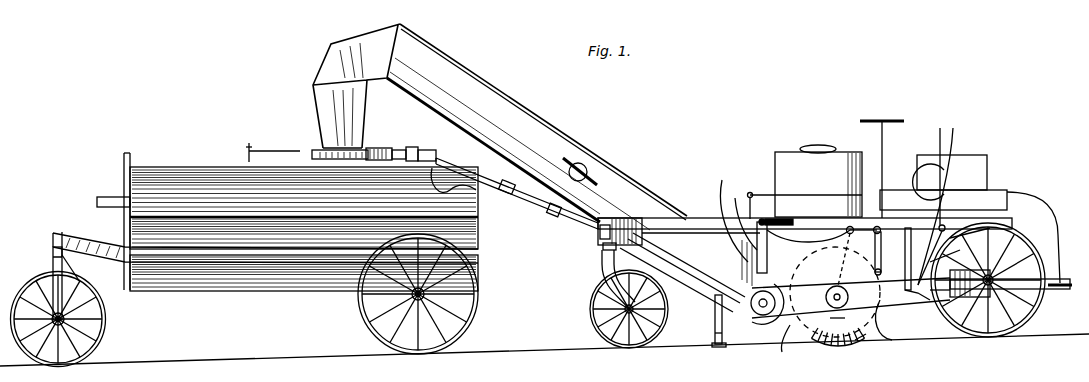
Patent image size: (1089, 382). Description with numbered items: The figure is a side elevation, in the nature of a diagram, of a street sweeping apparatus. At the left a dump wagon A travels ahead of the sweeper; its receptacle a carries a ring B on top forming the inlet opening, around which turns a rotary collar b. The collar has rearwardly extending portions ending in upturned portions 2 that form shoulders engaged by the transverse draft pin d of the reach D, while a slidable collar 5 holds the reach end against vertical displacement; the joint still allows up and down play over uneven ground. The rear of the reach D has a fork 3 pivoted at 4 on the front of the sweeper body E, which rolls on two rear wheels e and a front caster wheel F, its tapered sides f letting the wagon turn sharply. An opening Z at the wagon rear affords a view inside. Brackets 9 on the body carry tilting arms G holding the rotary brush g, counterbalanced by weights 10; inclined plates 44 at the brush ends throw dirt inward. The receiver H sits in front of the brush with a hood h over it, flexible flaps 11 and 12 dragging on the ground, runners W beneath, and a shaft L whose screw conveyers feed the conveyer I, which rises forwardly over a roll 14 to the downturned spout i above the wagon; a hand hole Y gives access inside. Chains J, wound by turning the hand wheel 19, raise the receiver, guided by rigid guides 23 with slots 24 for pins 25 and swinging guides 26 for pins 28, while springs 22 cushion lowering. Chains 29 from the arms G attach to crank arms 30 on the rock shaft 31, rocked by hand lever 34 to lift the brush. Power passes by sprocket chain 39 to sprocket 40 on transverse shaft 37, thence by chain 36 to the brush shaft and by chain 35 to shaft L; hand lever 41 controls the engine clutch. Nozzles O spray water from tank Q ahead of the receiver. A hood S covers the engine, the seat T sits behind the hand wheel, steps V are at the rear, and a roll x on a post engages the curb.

The receptacle a is at (190, 178).
The dump wagon A is at (290, 290).
The upturned portions 2 is at (426, 150).
The rotary collar b is at (318, 153).
The downturned spout i is at (330, 100).
The conveyer I is at (633, 184).
The hand hole Y is at (583, 164).
The ring B is at (371, 148).
The collar 5 is at (392, 150).
The transverse draft pin d is at (412, 149).
The fork 3 is at (434, 152).
The reach D is at (531, 197).
The opening Z is at (458, 185).
The pivot 4 is at (600, 233).
The roll 14 is at (620, 246).
The front caster wheel F is at (661, 340).
The body E is at (690, 217).
The tapered sides f is at (696, 218).
The springs 22 is at (727, 258).
The slots 24 is at (745, 266).
The shaft L is at (757, 314).
The runners W is at (758, 318).
The receiver H is at (770, 320).
The roll x is at (714, 320).
The foot w is at (714, 333).
The pins 25 is at (770, 250).
The nozzles O is at (731, 212).
The chains J is at (741, 215).
The hood h is at (810, 252).
The tank Q is at (787, 158).
The rigid guides 23 is at (776, 219).
The hand wheel 19 is at (884, 122).
The hand lever 41 is at (939, 135).
The hand lever 34 is at (955, 135).
The hood S is at (986, 179).
The seat T is at (975, 163).
The steps V is at (1068, 284).
The rear wheels e is at (980, 300).
The weights 10 is at (1000, 320).
The chains 29 is at (835, 292).
The sprocket chain 35 is at (824, 298).
The sprocket chain 36 is at (963, 236).
The rock shaft 31 is at (848, 232).
The crank arms 30 is at (864, 238).
The swinging guides 26 is at (850, 259).
The brackets 9 is at (905, 252).
The pins 28 is at (890, 253).
The sprocket chain 39 is at (938, 256).
The transverse shaft 37 is at (945, 263).
The sprocket 40 is at (912, 296).
The flexible flap 12 is at (888, 338).
The flexible flap 11 is at (787, 346).
The inclined plates 44 is at (836, 326).
The rotary brush g is at (860, 340).
The tilting arms G is at (940, 292).